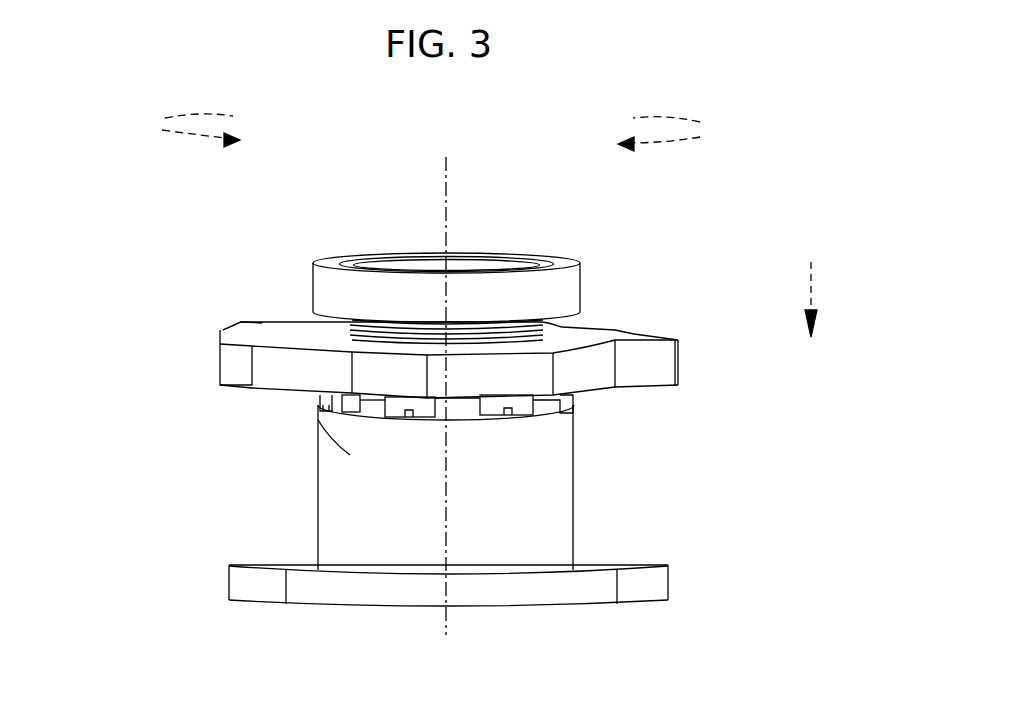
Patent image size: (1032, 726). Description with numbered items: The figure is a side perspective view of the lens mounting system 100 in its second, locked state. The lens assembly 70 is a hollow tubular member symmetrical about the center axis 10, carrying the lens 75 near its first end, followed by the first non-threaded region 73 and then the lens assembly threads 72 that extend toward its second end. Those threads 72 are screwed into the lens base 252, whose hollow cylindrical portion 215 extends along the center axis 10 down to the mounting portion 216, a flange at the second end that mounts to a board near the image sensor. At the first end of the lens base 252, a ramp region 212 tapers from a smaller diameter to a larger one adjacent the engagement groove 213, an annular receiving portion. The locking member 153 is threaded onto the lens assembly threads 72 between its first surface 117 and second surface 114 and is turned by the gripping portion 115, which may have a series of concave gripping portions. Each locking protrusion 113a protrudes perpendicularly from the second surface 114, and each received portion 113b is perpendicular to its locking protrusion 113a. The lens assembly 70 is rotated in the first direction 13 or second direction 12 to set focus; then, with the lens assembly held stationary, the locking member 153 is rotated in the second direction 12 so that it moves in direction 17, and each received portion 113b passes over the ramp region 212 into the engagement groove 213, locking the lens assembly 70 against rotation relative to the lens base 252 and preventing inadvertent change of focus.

The center axis 10 is at (440, 186).
The second direction 12 is at (703, 130).
The first direction 13 is at (163, 124).
The direction 17 is at (814, 287).
The lens assembly 70 is at (374, 258).
The lens assembly threads 72 is at (385, 312).
The first non-threaded region 73 is at (333, 283).
The lens 75 is at (400, 264).
The lens mounting system 100 is at (810, 682).
The locking protrusion 113a is at (312, 400).
The received portion 113b is at (350, 410).
The second surface 114 is at (237, 392).
The gripping portion 115 is at (240, 360).
The first surface 117 is at (223, 334).
The locking member 153 is at (350, 417).
The ramp region 212 is at (466, 405).
The engagement groove 213 is at (578, 405).
The hollow cylindrical portion 215 is at (560, 516).
The mounting portion 216 is at (495, 585).
The lens base 252 is at (535, 500).